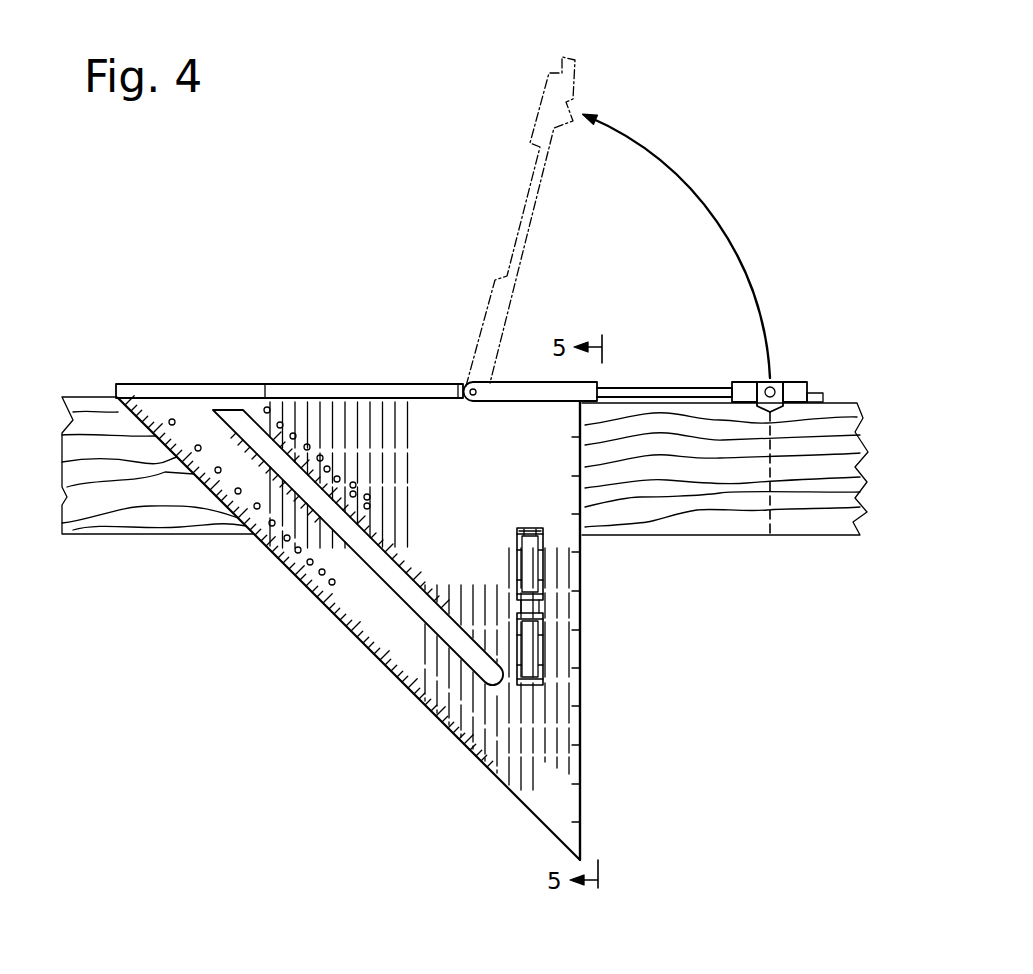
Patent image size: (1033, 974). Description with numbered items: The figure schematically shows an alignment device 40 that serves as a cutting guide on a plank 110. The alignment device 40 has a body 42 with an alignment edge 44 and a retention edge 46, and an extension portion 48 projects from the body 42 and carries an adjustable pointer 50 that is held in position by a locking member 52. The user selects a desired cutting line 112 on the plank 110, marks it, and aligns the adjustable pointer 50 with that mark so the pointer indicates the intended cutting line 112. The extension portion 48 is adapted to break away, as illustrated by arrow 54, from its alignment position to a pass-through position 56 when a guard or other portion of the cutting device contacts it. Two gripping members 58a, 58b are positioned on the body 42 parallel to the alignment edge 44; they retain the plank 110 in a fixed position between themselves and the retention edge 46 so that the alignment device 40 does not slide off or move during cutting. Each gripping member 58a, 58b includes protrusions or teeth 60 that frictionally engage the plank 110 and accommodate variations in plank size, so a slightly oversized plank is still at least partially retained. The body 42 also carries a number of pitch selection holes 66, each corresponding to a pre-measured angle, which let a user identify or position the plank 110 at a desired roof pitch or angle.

The alignment device 40 is at (337, 687).
The body 42 is at (297, 578).
The alignment edge 44 is at (584, 609).
The retention edge 46 is at (330, 391).
The extension portion 48 is at (657, 391).
The adjustable pointer 50 is at (746, 390).
The locking member 52 is at (774, 389).
The arrow 54 is at (716, 214).
The pass-through position 56 is at (517, 232).
The gripping member 58a is at (530, 560).
The gripping member 58b is at (530, 648).
The protrusions or teeth 60 is at (530, 531).
The pitch selection holes 66 is at (265, 407).
The plank 110 is at (808, 528).
The cutting line 112 is at (767, 510).